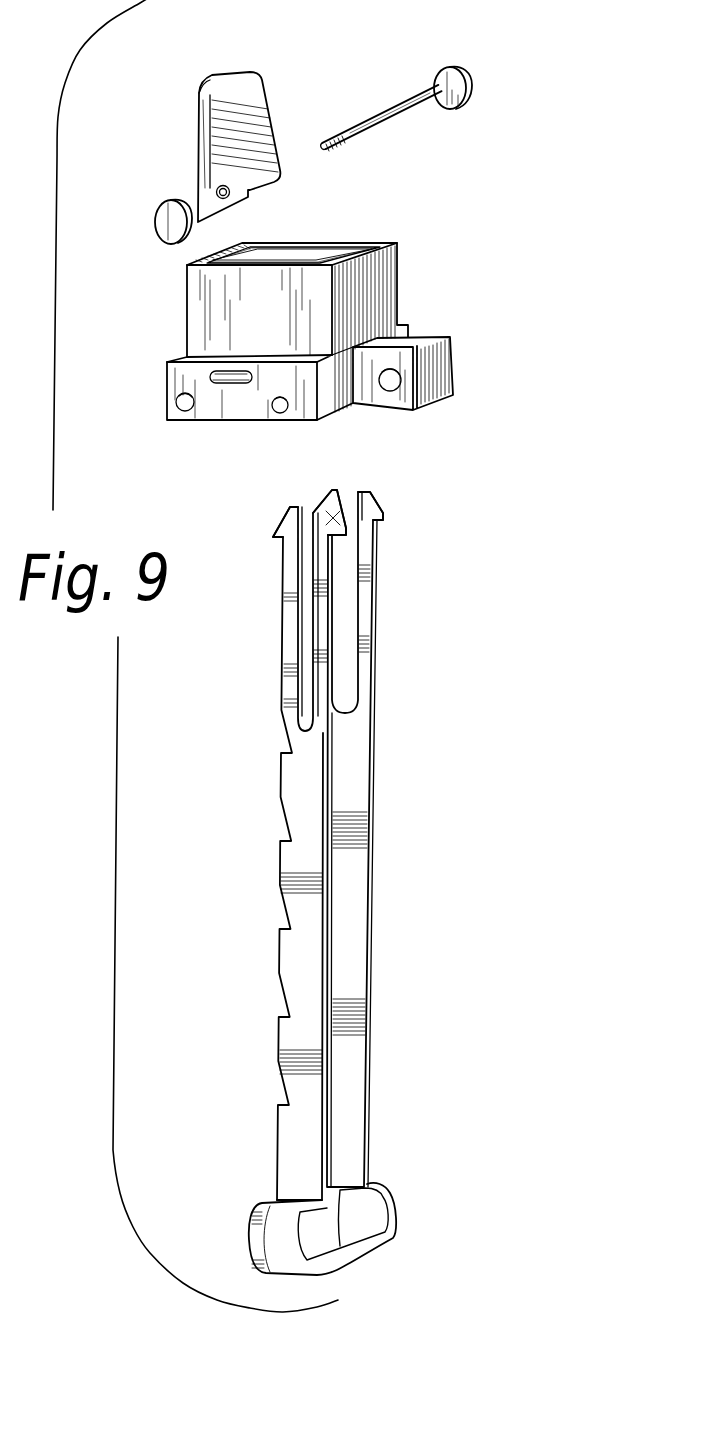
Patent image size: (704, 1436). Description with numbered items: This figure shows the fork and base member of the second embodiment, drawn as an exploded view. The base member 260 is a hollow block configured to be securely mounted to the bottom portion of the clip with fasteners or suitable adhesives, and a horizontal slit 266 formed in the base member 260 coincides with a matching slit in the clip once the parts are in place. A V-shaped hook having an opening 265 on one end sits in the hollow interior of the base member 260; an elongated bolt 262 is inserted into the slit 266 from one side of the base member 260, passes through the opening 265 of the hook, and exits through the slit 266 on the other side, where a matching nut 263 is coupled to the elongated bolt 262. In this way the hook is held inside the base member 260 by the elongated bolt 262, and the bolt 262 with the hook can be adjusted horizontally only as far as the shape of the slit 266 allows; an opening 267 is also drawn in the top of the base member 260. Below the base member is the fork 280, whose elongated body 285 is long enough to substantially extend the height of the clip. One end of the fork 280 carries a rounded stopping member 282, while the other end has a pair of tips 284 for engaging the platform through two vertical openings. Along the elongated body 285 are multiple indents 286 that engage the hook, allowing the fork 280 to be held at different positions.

The base member 260 is at (458, 286).
The elongated bolt 262 is at (392, 112).
The matching nut 263 is at (165, 223).
The opening 265 is at (200, 188).
The horizontal slit 266 is at (238, 386).
The opening 267 is at (317, 250).
The fork 280 is at (325, 859).
The rounded stopping member 282 is at (395, 1210).
The tips 284 is at (367, 507).
The elongated body 285 is at (249, 845).
The indents 286 is at (275, 829).